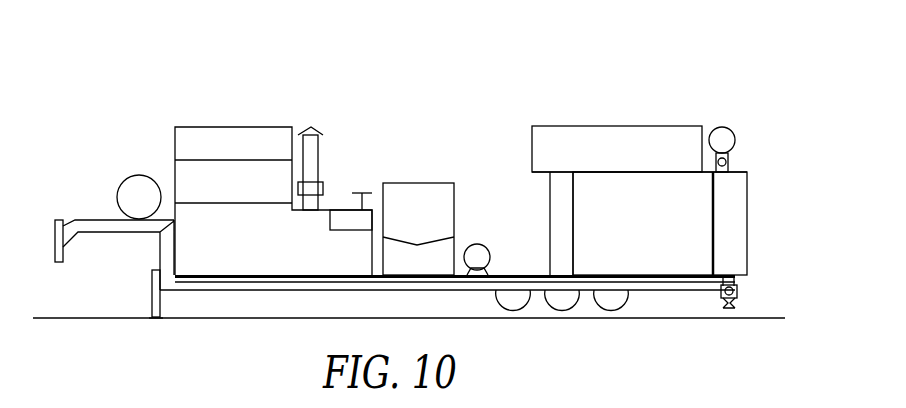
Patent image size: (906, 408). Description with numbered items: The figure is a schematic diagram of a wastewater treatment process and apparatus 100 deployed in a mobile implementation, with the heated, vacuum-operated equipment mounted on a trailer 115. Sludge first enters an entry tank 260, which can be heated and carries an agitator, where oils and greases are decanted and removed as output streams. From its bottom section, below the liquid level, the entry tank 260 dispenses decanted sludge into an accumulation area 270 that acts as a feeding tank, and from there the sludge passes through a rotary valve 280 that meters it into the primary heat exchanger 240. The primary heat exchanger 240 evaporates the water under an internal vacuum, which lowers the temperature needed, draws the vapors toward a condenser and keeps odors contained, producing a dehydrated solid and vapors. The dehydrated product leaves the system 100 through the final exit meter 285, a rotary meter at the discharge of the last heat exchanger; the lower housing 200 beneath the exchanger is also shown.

The wastewater treatment process and apparatus 100 is at (425, 67).
The trailer 115 is at (70, 198).
The mixing unit 200 is at (700, 228).
The primary heat exchanger 240 is at (592, 118).
The entry tank 260 is at (407, 183).
The accumulation area 270 is at (718, 123).
The rotary valve 280 is at (733, 160).
The exit meter 285 is at (743, 290).